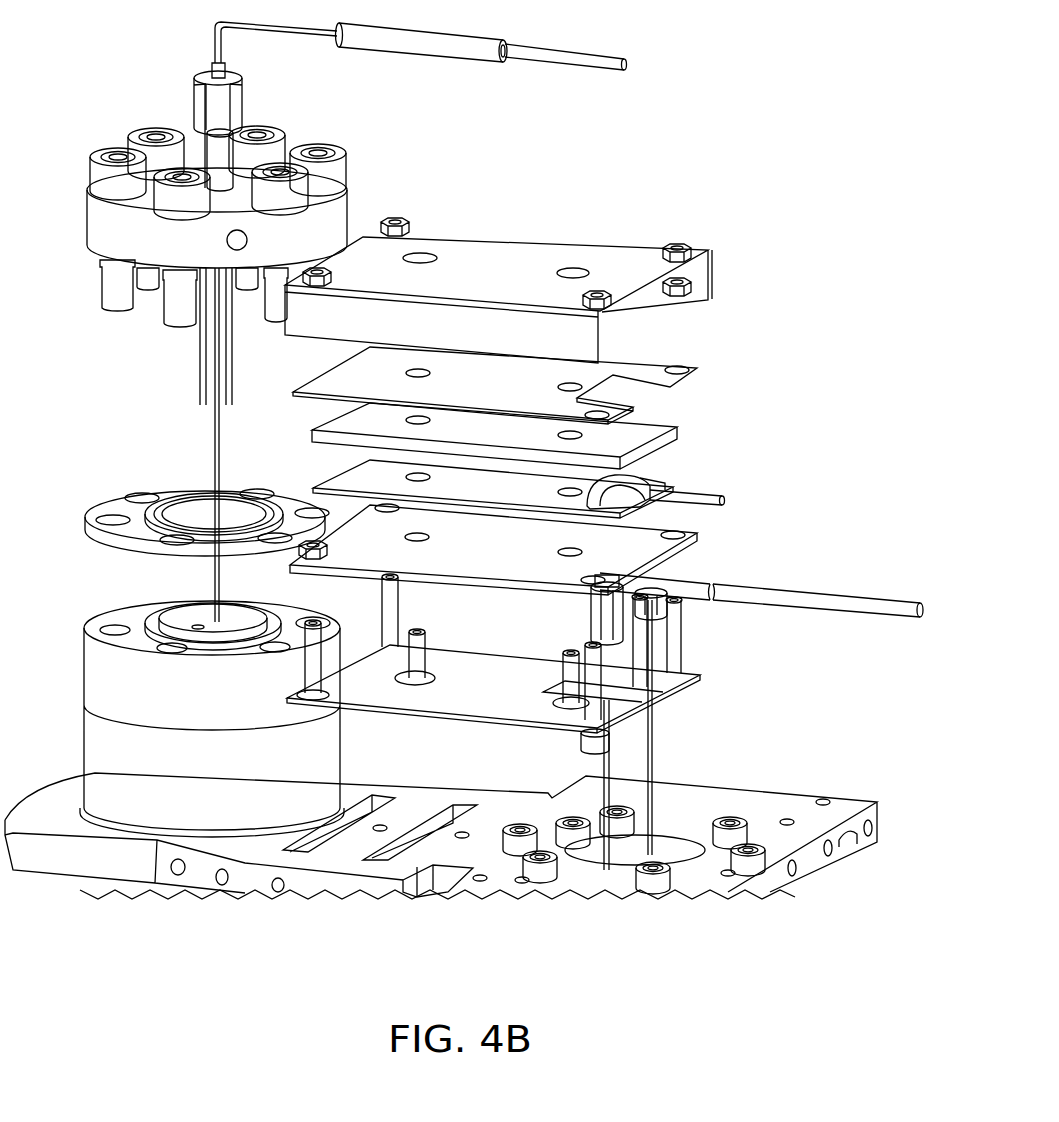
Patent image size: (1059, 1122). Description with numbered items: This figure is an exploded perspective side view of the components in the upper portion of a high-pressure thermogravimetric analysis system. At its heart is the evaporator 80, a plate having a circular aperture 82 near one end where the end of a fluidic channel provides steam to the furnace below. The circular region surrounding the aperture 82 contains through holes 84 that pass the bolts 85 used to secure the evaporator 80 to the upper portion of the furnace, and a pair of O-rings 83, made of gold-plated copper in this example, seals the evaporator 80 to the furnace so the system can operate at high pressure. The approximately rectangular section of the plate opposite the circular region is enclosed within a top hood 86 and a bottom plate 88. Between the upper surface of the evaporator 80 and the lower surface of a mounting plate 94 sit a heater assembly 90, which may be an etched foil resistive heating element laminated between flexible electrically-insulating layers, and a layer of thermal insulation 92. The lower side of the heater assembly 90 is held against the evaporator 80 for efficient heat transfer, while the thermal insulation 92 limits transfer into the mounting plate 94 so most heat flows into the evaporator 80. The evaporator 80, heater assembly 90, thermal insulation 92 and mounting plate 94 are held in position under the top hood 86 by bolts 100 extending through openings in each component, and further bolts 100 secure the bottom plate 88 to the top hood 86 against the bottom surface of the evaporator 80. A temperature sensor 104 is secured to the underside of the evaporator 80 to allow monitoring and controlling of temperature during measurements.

The evaporator 80 is at (696, 534).
The circular aperture 82 is at (236, 518).
The O-rings 83 is at (203, 492).
The through holes 84 is at (105, 520).
The bolts 85 is at (118, 152).
The top hood 86 is at (535, 238).
The bottom plate 88 is at (470, 720).
The heater assembly 90 is at (667, 476).
The thermal insulation layer 92 is at (673, 434).
The mounting plate 94 is at (690, 367).
The bolts 100 is at (424, 640).
The temperature sensor 104 is at (712, 595).